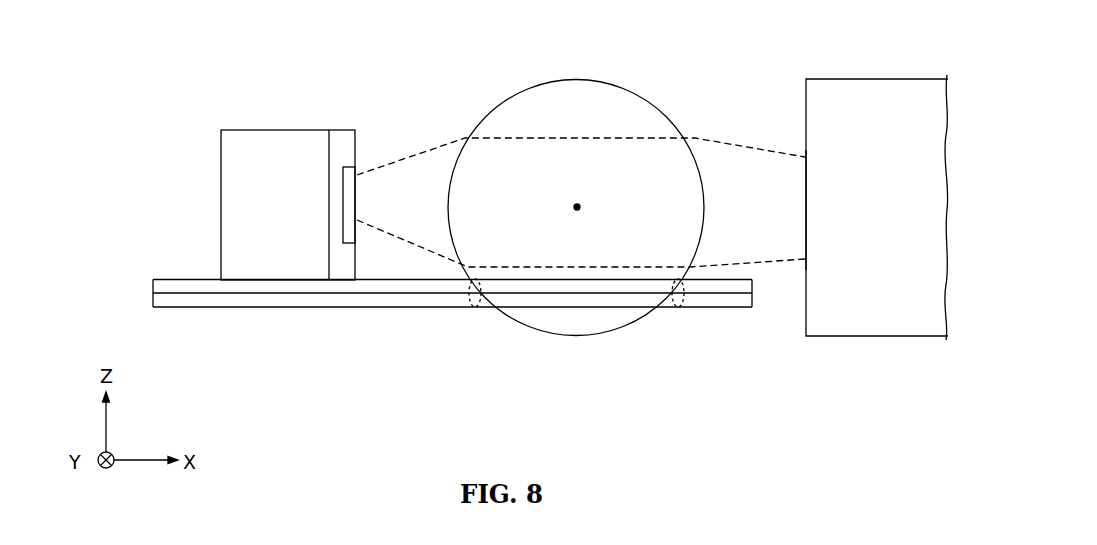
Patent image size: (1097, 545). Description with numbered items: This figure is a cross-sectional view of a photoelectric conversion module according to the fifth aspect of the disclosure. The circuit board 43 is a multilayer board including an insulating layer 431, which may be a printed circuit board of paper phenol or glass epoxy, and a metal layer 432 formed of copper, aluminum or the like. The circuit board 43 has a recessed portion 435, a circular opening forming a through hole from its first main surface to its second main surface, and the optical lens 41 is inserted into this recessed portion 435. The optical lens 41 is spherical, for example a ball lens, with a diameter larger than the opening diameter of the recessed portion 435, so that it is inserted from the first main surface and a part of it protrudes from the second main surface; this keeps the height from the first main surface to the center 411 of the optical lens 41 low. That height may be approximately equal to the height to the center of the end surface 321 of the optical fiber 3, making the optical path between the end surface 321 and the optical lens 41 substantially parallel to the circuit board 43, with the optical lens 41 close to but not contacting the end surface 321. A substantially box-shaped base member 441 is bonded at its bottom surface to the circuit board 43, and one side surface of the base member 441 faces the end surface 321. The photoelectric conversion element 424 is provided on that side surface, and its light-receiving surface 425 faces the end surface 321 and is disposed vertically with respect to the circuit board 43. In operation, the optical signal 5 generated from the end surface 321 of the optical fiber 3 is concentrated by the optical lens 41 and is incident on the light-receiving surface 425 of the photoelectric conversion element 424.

The optical fiber 3 is at (886, 79).
The optical signal 5 is at (753, 147).
The optical lens 41 is at (577, 79).
The center 411 is at (578, 207).
The circuit board 43 is at (397, 296).
The insulating layer 431 is at (153, 300).
The metal layer 432 is at (153, 286).
The recessed portion 435 is at (478, 308).
The end surface 321 is at (806, 205).
The photoelectric conversion element 424 is at (340, 130).
The light-receiving surface 425 is at (356, 203).
The base member 441 is at (221, 207).